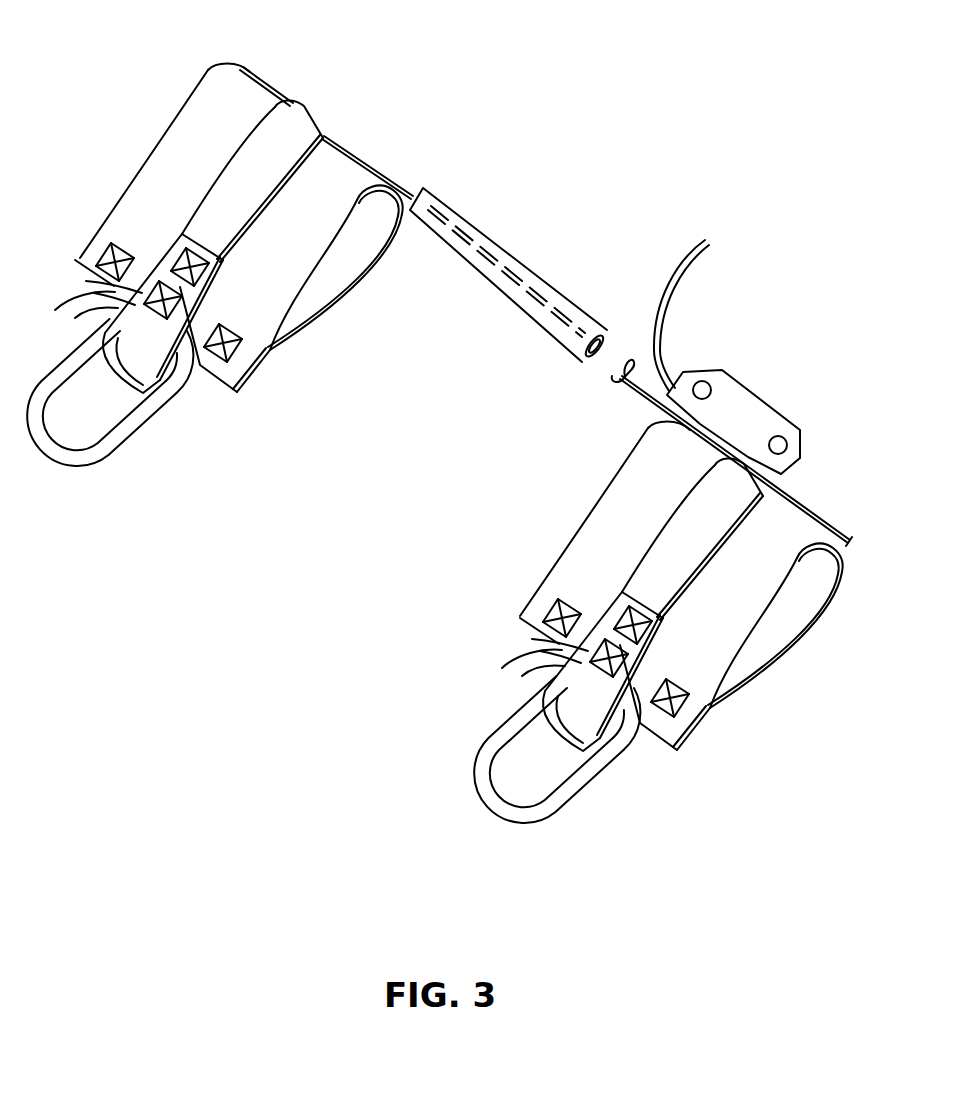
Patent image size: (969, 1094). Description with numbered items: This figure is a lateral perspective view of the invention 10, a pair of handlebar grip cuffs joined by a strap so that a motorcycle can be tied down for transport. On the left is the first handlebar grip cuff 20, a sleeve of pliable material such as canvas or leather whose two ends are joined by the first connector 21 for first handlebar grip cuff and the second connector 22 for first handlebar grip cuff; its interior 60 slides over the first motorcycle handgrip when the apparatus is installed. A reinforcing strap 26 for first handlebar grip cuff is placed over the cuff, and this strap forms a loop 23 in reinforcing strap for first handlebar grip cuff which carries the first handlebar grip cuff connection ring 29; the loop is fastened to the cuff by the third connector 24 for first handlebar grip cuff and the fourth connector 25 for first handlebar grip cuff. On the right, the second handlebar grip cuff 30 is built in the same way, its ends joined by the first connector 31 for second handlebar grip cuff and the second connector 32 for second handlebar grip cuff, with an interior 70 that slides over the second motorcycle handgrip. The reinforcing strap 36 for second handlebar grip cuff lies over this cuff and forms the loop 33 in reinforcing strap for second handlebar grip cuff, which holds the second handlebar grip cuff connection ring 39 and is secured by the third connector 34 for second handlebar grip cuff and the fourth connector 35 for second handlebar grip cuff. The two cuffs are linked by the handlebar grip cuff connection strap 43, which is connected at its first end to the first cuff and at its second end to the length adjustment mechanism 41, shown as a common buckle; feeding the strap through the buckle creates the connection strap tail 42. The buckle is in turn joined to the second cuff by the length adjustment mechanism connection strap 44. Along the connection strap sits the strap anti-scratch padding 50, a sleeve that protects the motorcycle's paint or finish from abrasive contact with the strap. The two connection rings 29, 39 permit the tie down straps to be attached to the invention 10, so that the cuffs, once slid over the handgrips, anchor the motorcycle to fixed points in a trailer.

The invention 10 is at (591, 116).
The first handlebar grip cuff 20 is at (153, 126).
The first connector for first handlebar grip cuff 21 is at (100, 258).
The second connector for first handlebar grip cuff 22 is at (244, 350).
The loop in reinforcing strap for first handlebar grip cuff 23 is at (102, 301).
The third connector for first handlebar grip cuff 24 is at (140, 290).
The fourth connector for first handlebar grip cuff 25 is at (181, 236).
The reinforcing strap for first handlebar grip cuff 26 is at (317, 118).
The first handlebar grip cuff connection ring 29 is at (58, 480).
The second handlebar grip cuff 30 is at (676, 579).
The first connector for second handlebar grip cuff 31 is at (514, 598).
The second connector for second handlebar grip cuff 32 is at (731, 660).
The loop in reinforcing strap for second handlebar grip cuff 33 is at (602, 725).
The third connector for second handlebar grip cuff 34 is at (528, 650).
The fourth connector for second handlebar grip cuff 35 is at (594, 615).
The reinforcing strap for second handlebar grip cuff 36 is at (692, 539).
The second handlebar grip cuff connection ring 39 is at (557, 767).
The length adjustment mechanism 41 is at (764, 402).
The connection strap tail 42 is at (672, 273).
The handlebar grip cuff connection strap 43 is at (246, 67).
The length adjustment mechanism connection strap 44 is at (812, 500).
The strap anti-scratch padding 50 is at (490, 293).
The interior in the first handlebar grip cuff 60 is at (396, 303).
The interior in the second handlebar grip cuff 70 is at (849, 632).